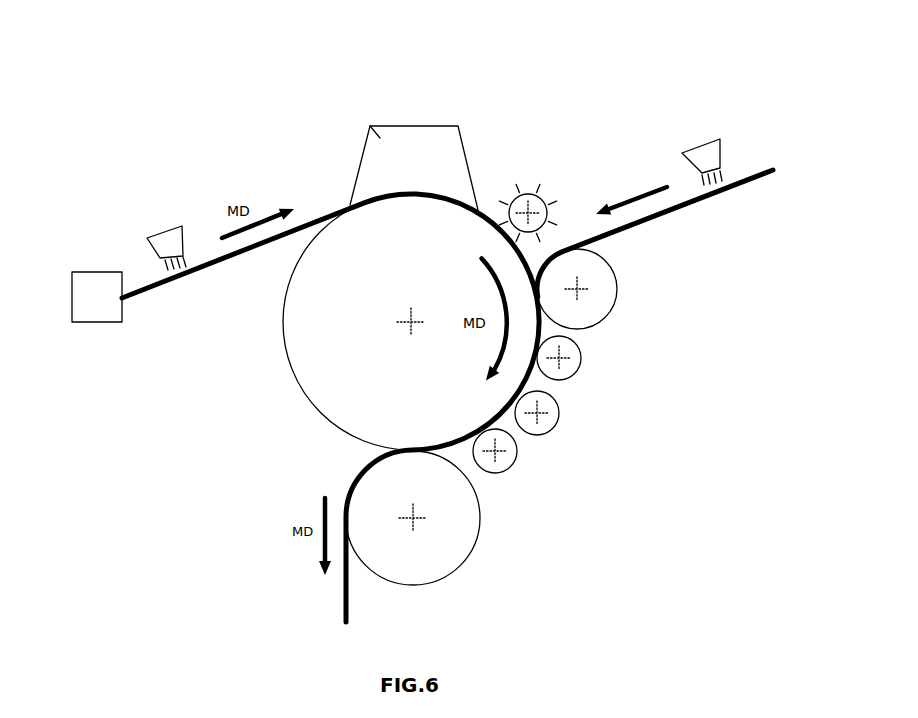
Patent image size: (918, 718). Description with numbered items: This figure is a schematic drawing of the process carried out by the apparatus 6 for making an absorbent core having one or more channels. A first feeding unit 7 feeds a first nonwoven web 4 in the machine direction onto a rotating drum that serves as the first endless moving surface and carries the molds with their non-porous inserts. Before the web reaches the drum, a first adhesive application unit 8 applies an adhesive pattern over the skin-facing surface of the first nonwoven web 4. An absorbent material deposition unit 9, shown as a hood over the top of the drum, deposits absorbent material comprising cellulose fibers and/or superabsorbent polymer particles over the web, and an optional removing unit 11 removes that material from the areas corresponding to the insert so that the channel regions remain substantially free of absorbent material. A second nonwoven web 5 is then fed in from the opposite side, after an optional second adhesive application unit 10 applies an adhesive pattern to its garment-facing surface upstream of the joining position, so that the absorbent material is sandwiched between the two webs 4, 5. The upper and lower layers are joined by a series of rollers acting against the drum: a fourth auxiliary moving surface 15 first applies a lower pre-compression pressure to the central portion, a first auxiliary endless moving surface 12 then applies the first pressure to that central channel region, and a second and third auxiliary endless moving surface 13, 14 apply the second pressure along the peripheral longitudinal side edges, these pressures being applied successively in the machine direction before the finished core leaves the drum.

The first nonwoven web 4 is at (146, 281).
The second nonwoven web 5 is at (757, 166).
The apparatus 6 is at (184, 80).
The first feeding unit 7 is at (80, 272).
The first adhesive application unit 8 is at (164, 232).
The absorbent material deposition unit 9 is at (370, 126).
The second adhesive application unit 10 is at (701, 140).
The removing unit 11 is at (528, 193).
The first auxiliary endless moving surface 12 is at (556, 428).
The second auxiliary endless moving surface 13 is at (551, 481).
The third auxiliary endless moving surface 14 is at (508, 470).
The fourth auxiliary moving surface 15 is at (581, 360).